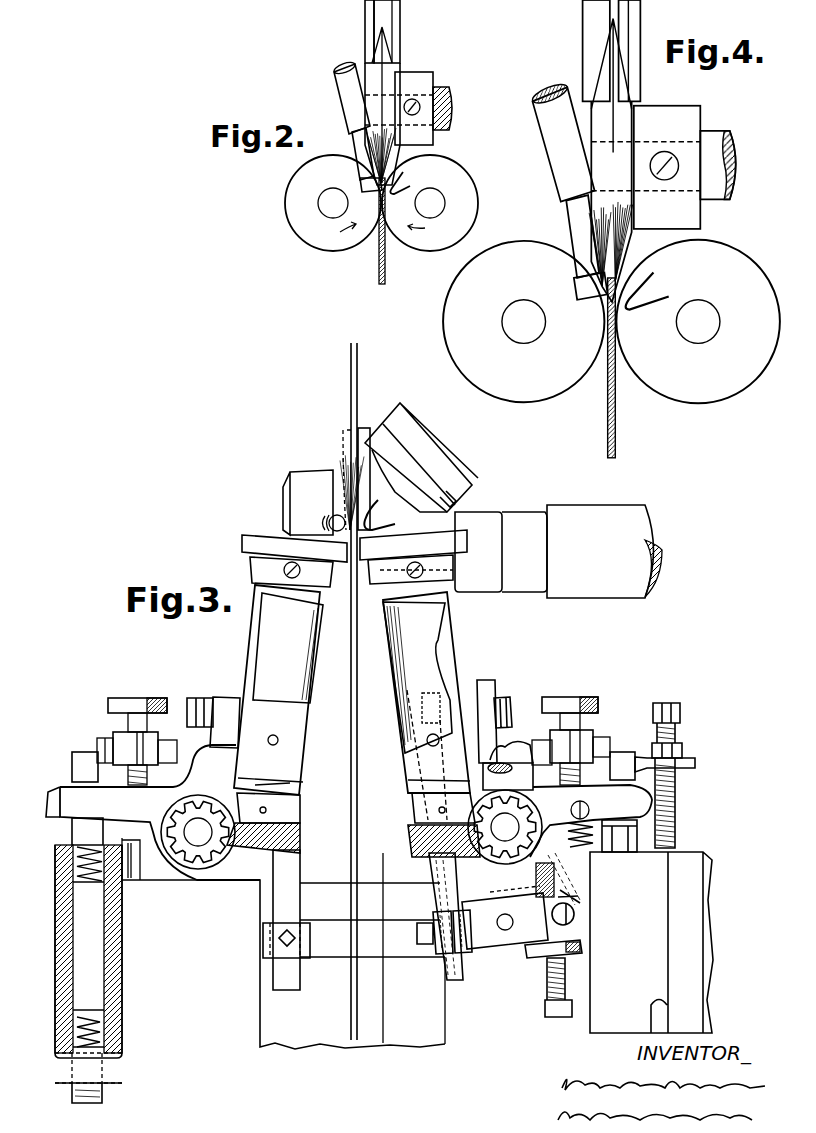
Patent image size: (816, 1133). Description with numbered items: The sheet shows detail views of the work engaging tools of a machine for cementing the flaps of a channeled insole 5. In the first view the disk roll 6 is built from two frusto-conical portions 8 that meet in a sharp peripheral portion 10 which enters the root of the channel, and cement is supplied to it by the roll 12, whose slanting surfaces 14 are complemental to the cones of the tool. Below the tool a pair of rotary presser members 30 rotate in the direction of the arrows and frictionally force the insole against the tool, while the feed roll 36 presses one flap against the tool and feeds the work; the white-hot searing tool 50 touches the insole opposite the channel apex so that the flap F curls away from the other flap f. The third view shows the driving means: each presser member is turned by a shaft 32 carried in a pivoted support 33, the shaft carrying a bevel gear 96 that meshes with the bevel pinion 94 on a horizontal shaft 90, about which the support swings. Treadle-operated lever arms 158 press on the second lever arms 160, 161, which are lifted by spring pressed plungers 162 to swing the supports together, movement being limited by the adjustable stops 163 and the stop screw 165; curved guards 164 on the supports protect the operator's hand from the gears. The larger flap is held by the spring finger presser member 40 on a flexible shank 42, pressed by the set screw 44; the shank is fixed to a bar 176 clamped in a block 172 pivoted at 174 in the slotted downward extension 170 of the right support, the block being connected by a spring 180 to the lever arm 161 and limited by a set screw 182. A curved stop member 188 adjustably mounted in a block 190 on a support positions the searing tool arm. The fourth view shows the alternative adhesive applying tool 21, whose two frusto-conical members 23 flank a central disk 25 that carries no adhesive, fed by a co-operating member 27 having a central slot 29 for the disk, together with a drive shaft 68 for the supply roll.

In FIG. 2, the channeled insole 5 is at (386, 245).
In FIG. 4, the channeled insole 5 is at (601, 340).
In FIG. 3, the channeled insole 5 is at (358, 358).
In FIG. 2, the disk roll 6 is at (392, 134).
In FIG. 3, the disk roll 6 is at (346, 492).
In FIG. 2, the frusto-conical portions 8 is at (368, 75).
In FIG. 4, the frusto-conical portions 8 is at (564, 179).
In FIG. 2, the sharp peripheral portion 10 is at (384, 56).
In FIG. 2, the roll 12 is at (365, 14).
In FIG. 2, the slanting surfaces 14 is at (386, 15).
In FIG. 4, the adhesive applying tool 21 is at (641, 118).
In FIG. 4, the frusto-conical members 23 is at (598, 110).
In FIG. 4, the central disk 25 is at (601, 35).
In FIG. 4, the co-operating member 27 is at (572, 30).
In FIG. 4, the central slot 29 is at (600, 17).
In FIG. 2, the rotary presser members 30 is at (318, 243).
In FIG. 4, the rotary presser members 30 is at (518, 360).
In FIG. 3, the rotary presser members 30 is at (250, 537).
In FIG. 3, the shafts 32 is at (292, 815).
In FIG. 3, the supports 33 is at (256, 668).
In FIG. 2, the feed roll 36 is at (362, 184).
In FIG. 4, the feed roll 36 is at (580, 275).
In FIG. 3, the feed roll 36 is at (335, 518).
In FIG. 3, the presser member 40 is at (410, 569).
In FIG. 3, the flexible shank 42 is at (428, 680).
In FIG. 3, the set screw 44 is at (478, 690).
In FIG. 2, the searing tool 50 is at (410, 186).
In FIG. 4, the searing tool 50 is at (647, 305).
In FIG. 3, the searing tool 50 is at (378, 528).
In FIG. 2, the shaft 68 is at (452, 110).
In FIG. 4, the shaft 68 is at (692, 133).
In FIG. 3, the shaft 68 is at (662, 556).
In FIG. 3, the horizontal shaft 90 is at (190, 848).
In FIG. 3, the bevel pinion 94 is at (200, 836).
In FIG. 3, the bevel gear 96 is at (280, 850).
In FIG. 3, the lever arms 158 is at (75, 758).
In FIG. 3, the lever arm 160 is at (60, 802).
In FIG. 3, the lever arm 161 is at (640, 808).
In FIG. 3, the spring pressed plunger 162 is at (72, 832).
In FIG. 3, the adjustable stops 163 is at (128, 705).
In FIG. 3, the curved sheet material guards 164 is at (280, 617).
In FIG. 3, the stop screw 165 is at (680, 795).
In FIG. 3, the downward extension 170 is at (500, 948).
In FIG. 3, the block 172 is at (478, 945).
In FIG. 3, the pivot 174 is at (519, 919).
In FIG. 3, the bar 176 is at (432, 873).
In FIG. 3, the spring 180 is at (576, 916).
In FIG. 3, the set screw 182 is at (552, 1003).
In FIG. 3, the curved stop member 188 is at (536, 752).
In FIG. 3, the block 190 is at (535, 792).
In FIG. 2, the flap f is at (376, 190).
In FIG. 4, the flap f is at (576, 272).
In FIG. 2, the flap F is at (400, 167).
In FIG. 4, the flap F is at (612, 238).